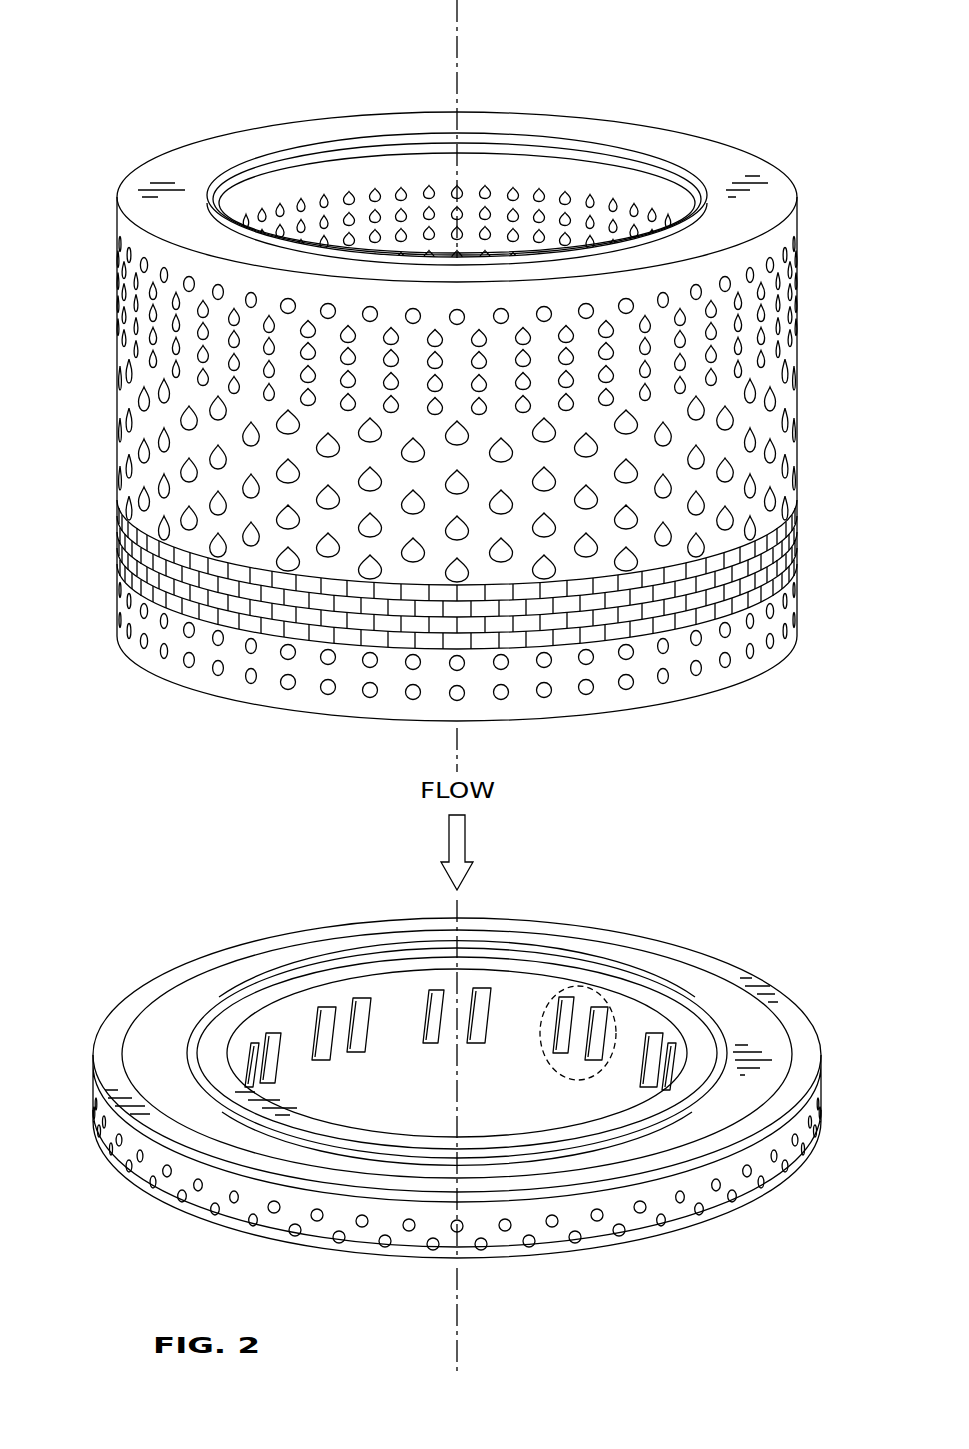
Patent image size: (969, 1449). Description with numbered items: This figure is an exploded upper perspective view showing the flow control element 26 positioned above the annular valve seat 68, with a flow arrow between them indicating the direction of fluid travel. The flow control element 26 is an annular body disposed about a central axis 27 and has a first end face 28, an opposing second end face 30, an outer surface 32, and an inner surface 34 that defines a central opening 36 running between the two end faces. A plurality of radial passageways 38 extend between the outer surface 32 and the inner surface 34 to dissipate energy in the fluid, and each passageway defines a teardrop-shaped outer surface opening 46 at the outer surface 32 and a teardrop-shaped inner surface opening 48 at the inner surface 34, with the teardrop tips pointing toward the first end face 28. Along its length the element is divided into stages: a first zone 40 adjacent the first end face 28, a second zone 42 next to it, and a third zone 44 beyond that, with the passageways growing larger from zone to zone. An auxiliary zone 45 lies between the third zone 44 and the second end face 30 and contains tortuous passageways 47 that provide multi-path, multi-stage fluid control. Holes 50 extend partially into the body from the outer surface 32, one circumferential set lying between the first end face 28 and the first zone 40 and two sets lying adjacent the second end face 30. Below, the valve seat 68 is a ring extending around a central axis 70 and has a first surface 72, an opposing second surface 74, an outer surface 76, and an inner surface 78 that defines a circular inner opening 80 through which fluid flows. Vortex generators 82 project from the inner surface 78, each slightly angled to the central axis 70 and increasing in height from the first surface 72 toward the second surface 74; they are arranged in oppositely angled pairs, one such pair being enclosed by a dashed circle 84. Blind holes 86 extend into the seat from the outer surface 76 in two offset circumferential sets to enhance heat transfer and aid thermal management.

The flow control element 26 is at (778, 147).
The central axis 27 is at (457, 48).
The first end face 28 is at (210, 145).
The second end face 30 is at (745, 690).
The outer surface 32 is at (117, 223).
The inner surface 34 is at (550, 180).
The central opening 36 is at (422, 168).
The radial passageways 38 is at (114, 386).
The first zone 40 is at (800, 275).
The second zone 42 is at (800, 362).
The third zone 44 is at (800, 440).
The auxiliary zone 45 is at (458, 574).
The outer surface opening 46 is at (117, 463).
The tortuous passageways 47 is at (155, 590).
The inner surface opening 48 is at (620, 205).
The holes 50 is at (795, 238).
The valve seat 68 is at (790, 970).
The central axis 70 is at (459, 1338).
The first surface 72 is at (733, 972).
The second surface 74 is at (697, 1225).
The outer surface 76 is at (180, 1165).
The inner surface 78 is at (388, 987).
The inner opening 80 is at (528, 1074).
The vortex generators 82 is at (432, 1042).
The dashed circle 84 is at (572, 1082).
The holes 86 is at (793, 1157).